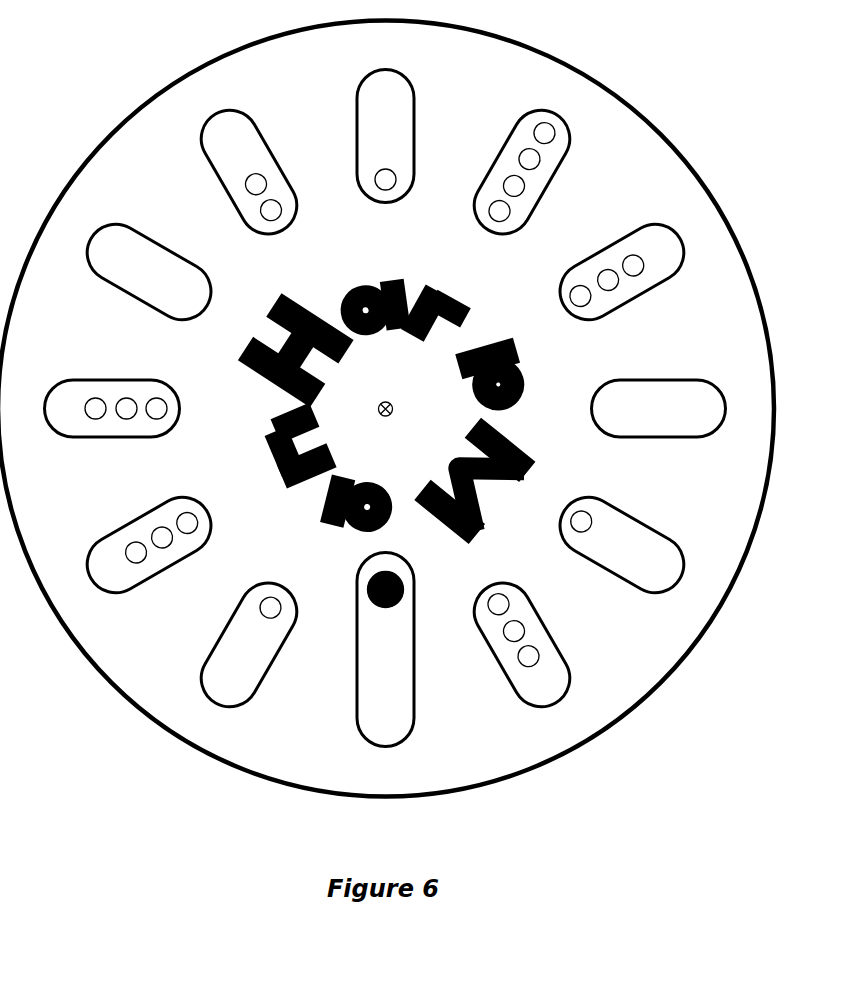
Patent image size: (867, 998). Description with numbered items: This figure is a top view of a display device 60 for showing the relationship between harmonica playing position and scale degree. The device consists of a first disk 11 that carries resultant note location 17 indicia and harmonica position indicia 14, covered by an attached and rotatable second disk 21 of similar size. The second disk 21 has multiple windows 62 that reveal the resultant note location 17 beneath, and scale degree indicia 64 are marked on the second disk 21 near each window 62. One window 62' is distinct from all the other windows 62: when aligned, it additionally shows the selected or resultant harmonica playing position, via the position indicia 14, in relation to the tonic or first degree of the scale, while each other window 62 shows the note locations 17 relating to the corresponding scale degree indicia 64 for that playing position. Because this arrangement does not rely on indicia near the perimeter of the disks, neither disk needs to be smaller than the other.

The first disk 11 is at (117, 702).
The position indicia 14 is at (404, 592).
The resultant note location 17 is at (396, 660).
The second disk 21 is at (615, 732).
The display device 60 is at (207, 805).
The windows 62 is at (532, 645).
The window 62' is at (409, 650).
The scale degree indicia 64 is at (398, 768).